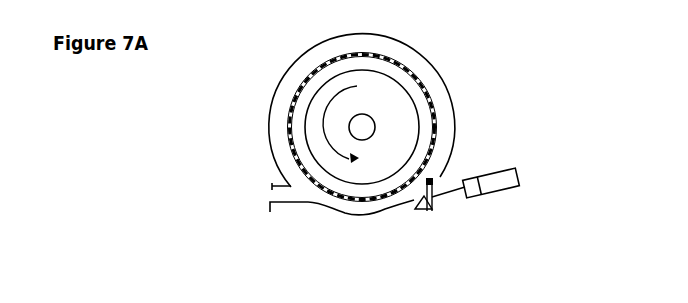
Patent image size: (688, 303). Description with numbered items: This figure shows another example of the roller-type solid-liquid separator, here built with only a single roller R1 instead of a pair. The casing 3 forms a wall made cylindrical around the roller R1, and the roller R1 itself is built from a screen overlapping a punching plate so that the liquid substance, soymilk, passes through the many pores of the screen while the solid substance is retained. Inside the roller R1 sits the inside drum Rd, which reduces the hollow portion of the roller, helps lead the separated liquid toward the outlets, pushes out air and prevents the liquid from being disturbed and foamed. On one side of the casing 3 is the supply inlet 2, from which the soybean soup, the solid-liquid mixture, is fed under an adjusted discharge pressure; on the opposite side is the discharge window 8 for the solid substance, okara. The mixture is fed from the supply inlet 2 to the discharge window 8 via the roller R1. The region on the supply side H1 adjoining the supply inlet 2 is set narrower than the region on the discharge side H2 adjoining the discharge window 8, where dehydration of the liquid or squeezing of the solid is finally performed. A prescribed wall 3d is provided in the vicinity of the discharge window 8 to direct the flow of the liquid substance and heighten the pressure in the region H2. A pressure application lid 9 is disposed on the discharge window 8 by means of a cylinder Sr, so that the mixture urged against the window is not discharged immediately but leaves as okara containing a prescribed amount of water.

The supply inlet 2 is at (268, 182).
The casing 3 is at (320, 45).
The prescribed wall 3d is at (490, 92).
The discharge window 8 is at (429, 207).
The pressure application lid 9 is at (433, 204).
The first roller R1 is at (408, 61).
The inside drum Rd is at (417, 113).
The region on the supply side H1 is at (307, 192).
The region on the discharge side H2 is at (510, 93).
The cylinder Sr is at (508, 178).